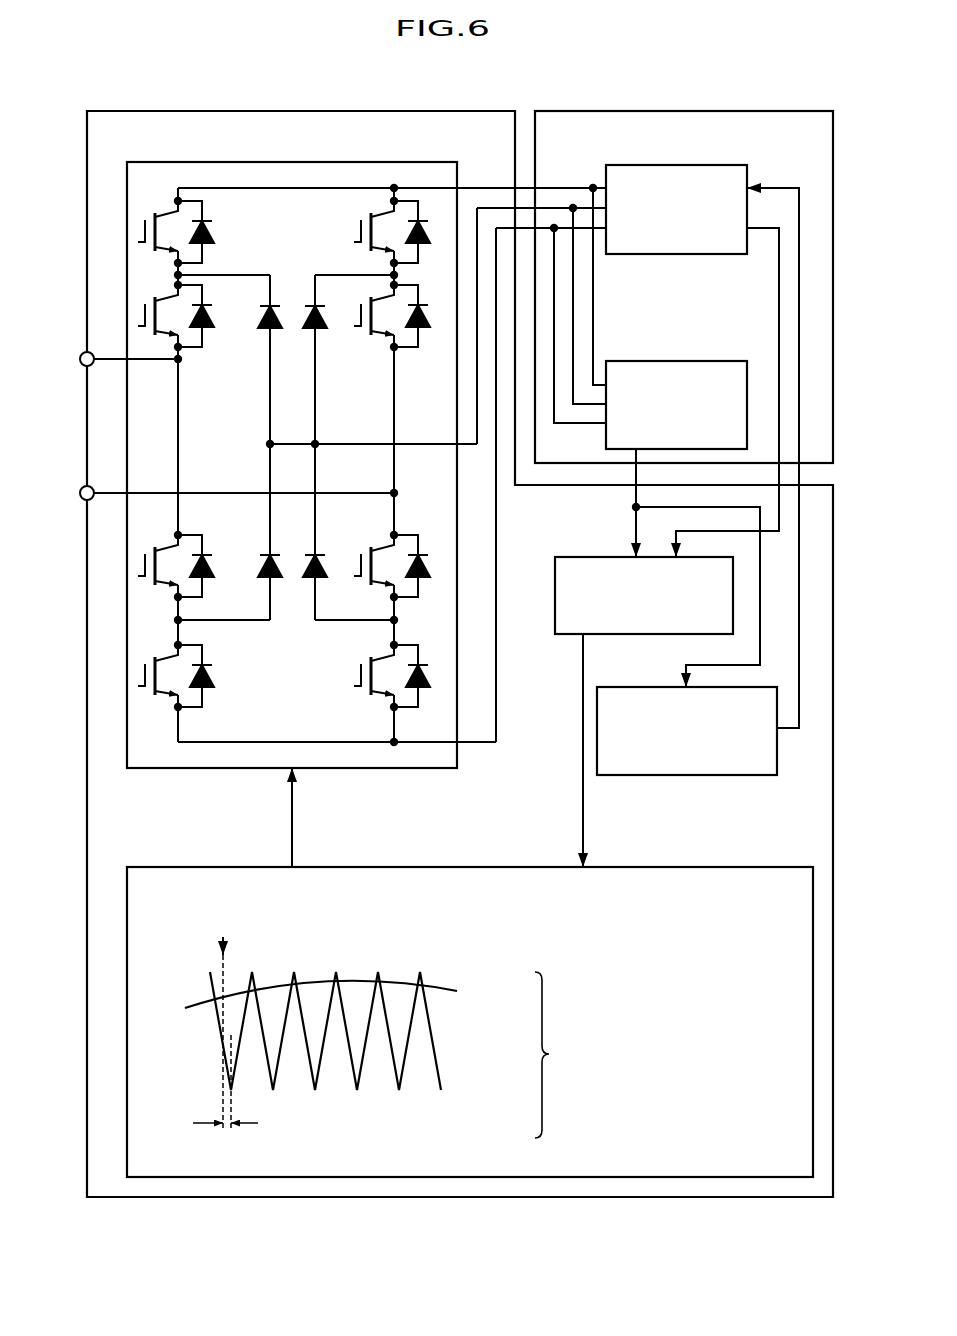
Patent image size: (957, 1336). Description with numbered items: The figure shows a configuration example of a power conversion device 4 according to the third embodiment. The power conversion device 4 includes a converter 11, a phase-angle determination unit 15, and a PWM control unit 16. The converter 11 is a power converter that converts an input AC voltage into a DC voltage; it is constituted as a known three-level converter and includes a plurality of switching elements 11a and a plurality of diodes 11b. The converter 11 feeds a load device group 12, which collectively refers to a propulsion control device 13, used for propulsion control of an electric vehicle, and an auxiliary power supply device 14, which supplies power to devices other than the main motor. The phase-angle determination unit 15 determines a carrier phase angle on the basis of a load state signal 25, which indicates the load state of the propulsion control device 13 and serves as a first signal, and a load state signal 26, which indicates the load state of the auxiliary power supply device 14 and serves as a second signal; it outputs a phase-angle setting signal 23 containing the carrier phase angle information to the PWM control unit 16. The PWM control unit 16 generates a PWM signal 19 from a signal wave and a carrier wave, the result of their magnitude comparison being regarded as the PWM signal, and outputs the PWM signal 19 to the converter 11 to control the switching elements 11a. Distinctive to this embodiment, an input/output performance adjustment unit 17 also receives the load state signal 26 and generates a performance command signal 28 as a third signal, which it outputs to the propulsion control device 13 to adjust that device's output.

The power conversion device 4 is at (373, 111).
The converter 11 is at (292, 162).
The switching element 11a is at (219, 229).
The diode 11b is at (254, 339).
The load device group 12 is at (677, 111).
The propulsion control device 13 is at (677, 165).
The auxiliary power supply device 14 is at (677, 361).
The phase-angle determination unit 15 is at (555, 597).
The PWM control unit 16 is at (750, 867).
The input/output performance adjustment unit 17 is at (687, 775).
The PWM signal 19 is at (292, 819).
The phase-angle setting signal 23 is at (583, 745).
The load state signal 25 is at (747, 534).
The load state signal 26 is at (636, 531).
The performance command signal 28 is at (797, 730).